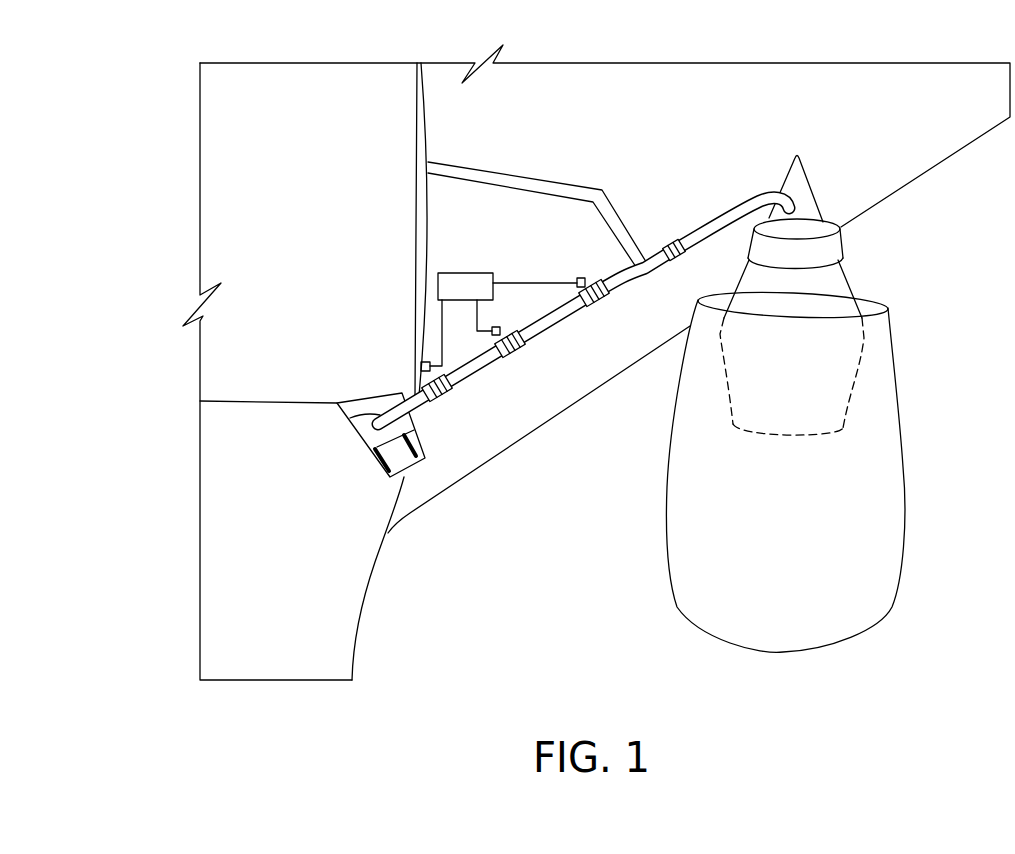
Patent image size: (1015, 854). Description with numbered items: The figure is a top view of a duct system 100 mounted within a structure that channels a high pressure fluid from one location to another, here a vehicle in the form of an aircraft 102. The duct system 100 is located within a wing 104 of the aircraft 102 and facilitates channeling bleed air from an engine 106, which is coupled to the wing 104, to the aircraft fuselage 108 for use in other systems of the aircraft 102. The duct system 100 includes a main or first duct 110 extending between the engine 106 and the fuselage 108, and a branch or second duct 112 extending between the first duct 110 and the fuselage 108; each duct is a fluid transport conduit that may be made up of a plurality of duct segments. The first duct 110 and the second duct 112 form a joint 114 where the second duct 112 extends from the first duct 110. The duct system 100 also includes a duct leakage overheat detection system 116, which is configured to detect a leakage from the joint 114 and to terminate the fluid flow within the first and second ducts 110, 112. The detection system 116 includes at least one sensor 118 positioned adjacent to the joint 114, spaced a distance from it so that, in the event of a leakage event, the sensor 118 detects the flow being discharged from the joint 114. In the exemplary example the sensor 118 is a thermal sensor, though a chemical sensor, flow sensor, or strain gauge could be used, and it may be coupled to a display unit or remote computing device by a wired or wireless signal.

The duct system 100 is at (723, 165).
The aircraft 102 is at (165, 89).
The wing 104 is at (607, 100).
The engine 106 is at (836, 283).
The aircraft fuselage 108 is at (315, 617).
The first duct 110 is at (637, 277).
The second duct 112 is at (543, 180).
The joint 114 is at (650, 226).
The duct leakage overheat detection system 116 is at (447, 273).
The sensor 118 is at (495, 327).